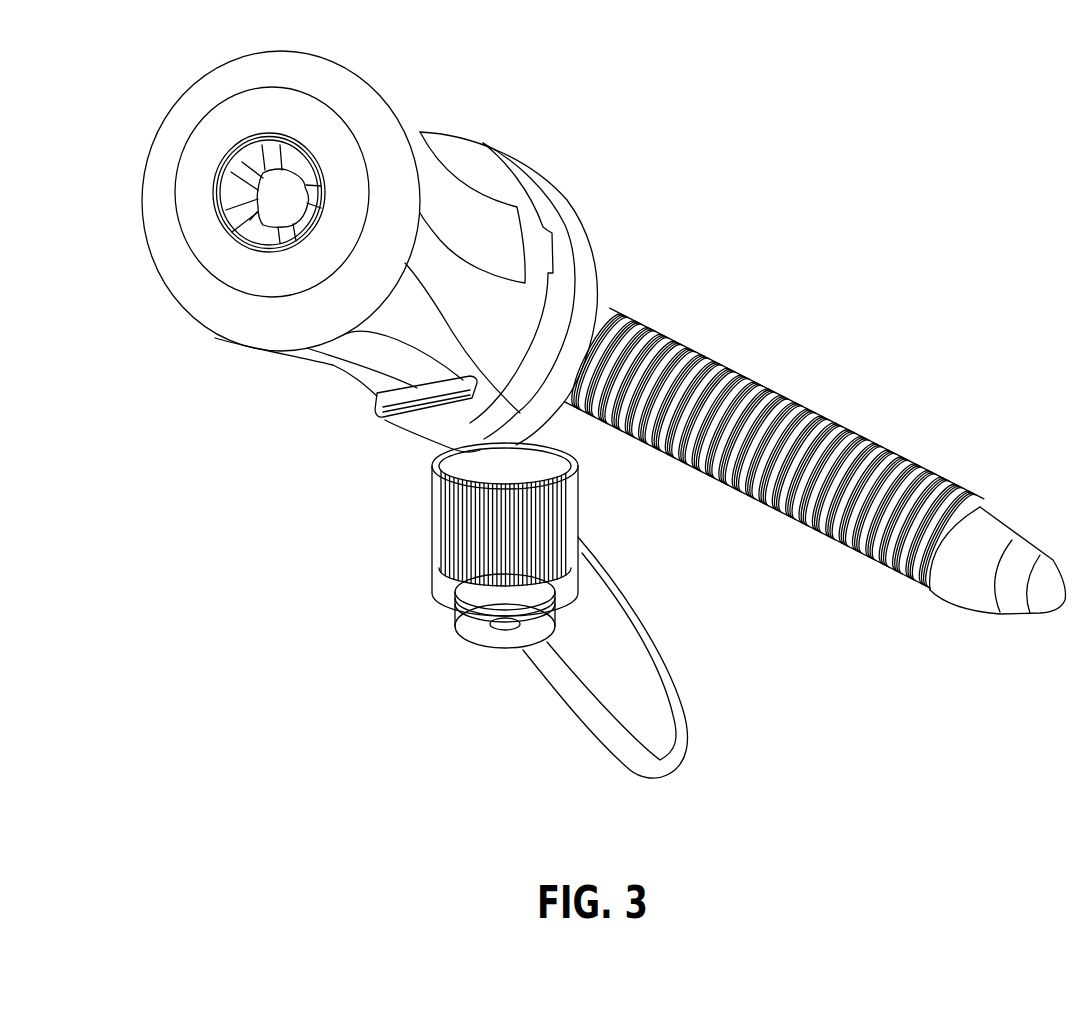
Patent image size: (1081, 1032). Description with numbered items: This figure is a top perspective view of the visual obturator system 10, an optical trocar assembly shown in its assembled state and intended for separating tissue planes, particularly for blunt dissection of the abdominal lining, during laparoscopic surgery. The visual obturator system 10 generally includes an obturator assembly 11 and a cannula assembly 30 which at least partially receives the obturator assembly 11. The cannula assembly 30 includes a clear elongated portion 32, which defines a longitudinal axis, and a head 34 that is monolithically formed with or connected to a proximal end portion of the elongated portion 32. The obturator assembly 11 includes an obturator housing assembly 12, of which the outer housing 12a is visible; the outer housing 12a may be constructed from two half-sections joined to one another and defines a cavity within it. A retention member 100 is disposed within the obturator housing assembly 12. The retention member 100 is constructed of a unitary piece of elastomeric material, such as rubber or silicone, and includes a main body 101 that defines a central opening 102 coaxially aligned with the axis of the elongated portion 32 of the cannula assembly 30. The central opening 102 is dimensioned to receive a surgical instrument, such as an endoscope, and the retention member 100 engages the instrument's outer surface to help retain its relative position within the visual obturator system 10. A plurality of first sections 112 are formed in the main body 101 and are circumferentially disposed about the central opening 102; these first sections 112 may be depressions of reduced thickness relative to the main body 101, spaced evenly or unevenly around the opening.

The visual obturator system 10 is at (722, 213).
The obturator assembly 11 is at (293, 370).
The obturator housing assembly 12 is at (196, 329).
The outer housing 12a is at (167, 288).
The cannula assembly 30 is at (764, 371).
The elongated portion 32 is at (822, 413).
The head 34 is at (598, 272).
The retention member 100 is at (301, 162).
The main body 101 is at (236, 237).
The central opening 102 is at (226, 155).
The first sections 112 is at (272, 134).